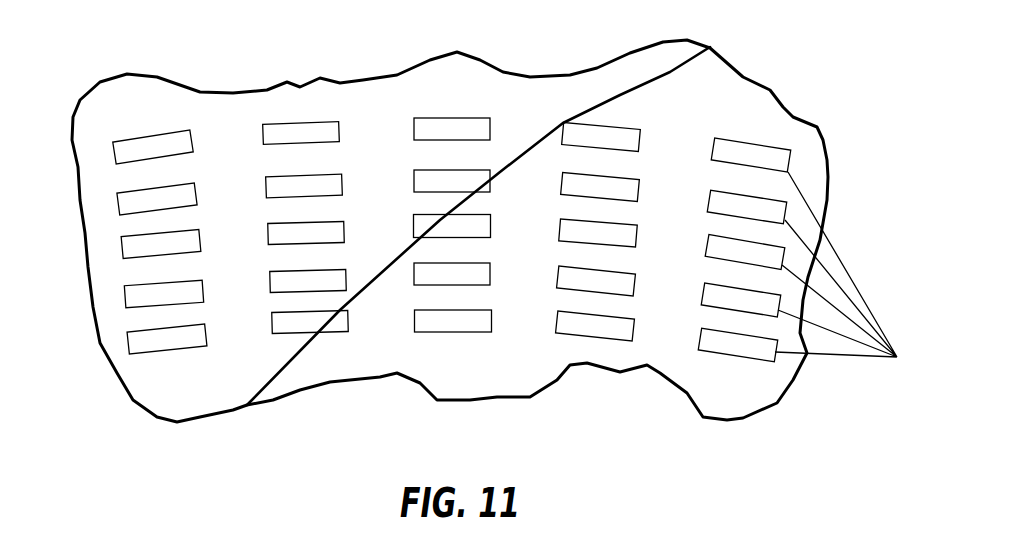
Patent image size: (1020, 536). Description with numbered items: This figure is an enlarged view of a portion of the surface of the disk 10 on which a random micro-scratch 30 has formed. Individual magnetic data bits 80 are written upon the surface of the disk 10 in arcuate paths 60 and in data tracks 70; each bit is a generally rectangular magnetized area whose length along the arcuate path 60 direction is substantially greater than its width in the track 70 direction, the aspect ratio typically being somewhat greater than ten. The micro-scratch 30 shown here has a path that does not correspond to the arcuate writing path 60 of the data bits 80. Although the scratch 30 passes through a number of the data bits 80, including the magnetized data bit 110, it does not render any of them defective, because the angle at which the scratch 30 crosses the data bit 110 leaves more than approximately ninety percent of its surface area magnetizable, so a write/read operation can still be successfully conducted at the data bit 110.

The disk 10 is at (82, 108).
The micro-scratch 30 is at (658, 72).
The arcuate path 60 is at (851, 277).
The data track 70 is at (172, 348).
The magnetic data bits 80 is at (153, 145).
The data bit 110 is at (420, 225).